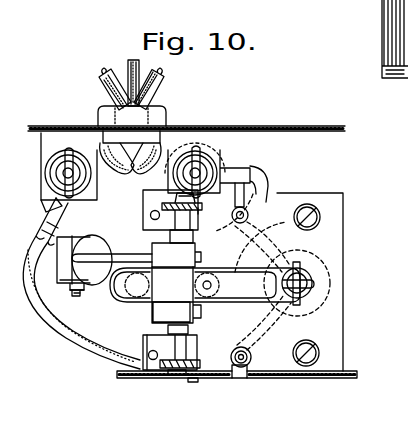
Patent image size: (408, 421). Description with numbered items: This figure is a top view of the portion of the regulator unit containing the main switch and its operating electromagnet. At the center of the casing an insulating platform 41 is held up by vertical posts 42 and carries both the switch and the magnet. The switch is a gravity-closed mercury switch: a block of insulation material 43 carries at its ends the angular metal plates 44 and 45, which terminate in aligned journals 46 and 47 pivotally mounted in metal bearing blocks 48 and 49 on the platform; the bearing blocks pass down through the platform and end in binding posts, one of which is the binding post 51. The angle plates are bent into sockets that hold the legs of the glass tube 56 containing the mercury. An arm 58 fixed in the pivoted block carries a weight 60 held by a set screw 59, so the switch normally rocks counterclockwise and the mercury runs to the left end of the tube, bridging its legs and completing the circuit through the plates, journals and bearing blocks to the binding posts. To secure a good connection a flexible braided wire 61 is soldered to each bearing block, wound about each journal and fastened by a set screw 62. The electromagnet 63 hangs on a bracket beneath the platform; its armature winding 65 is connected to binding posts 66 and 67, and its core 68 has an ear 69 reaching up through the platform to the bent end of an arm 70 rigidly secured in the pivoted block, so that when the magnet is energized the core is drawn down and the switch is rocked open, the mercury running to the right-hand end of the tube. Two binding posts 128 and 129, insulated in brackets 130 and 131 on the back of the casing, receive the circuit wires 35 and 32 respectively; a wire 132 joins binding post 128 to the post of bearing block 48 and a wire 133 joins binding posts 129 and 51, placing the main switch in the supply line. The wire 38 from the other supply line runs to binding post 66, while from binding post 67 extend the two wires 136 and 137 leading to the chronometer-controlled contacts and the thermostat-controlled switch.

The circuit wire 32 is at (166, 76).
The circuit wire 35 is at (102, 75).
The wire 38 is at (134, 62).
The insulating platform 41 is at (337, 217).
The vertical posts 42 is at (302, 212).
The block of insulation material 43 is at (163, 258).
The angular metal plate 44 is at (148, 332).
The angular metal plate 45 is at (199, 253).
The journal 46 is at (192, 341).
The journal 47 is at (175, 208).
The bearing block 48 is at (197, 324).
The bearing block 49 is at (173, 233).
The binding post 51 is at (197, 214).
The glass tube 56 is at (243, 277).
The arm 58 is at (124, 258).
The set screw 59 is at (78, 298).
The weight 60 is at (97, 273).
The flexible braided wire 61 is at (167, 370).
The set screw 62 is at (168, 197).
The electromagnet 63 is at (345, 250).
The armature winding 65 is at (266, 272).
The binding post 66 is at (248, 210).
The binding post 67 is at (248, 353).
The core 68 is at (309, 280).
The ear 69 is at (310, 289).
The arm 70 is at (299, 264).
The binding post 128 is at (76, 122).
The binding post 129 is at (188, 123).
The bracket 130 is at (53, 135).
The bracket 131 is at (238, 130).
The wire 132 is at (50, 283).
The wire 133 is at (265, 181).
The wire 136 is at (137, 379).
The wire 137 is at (285, 380).